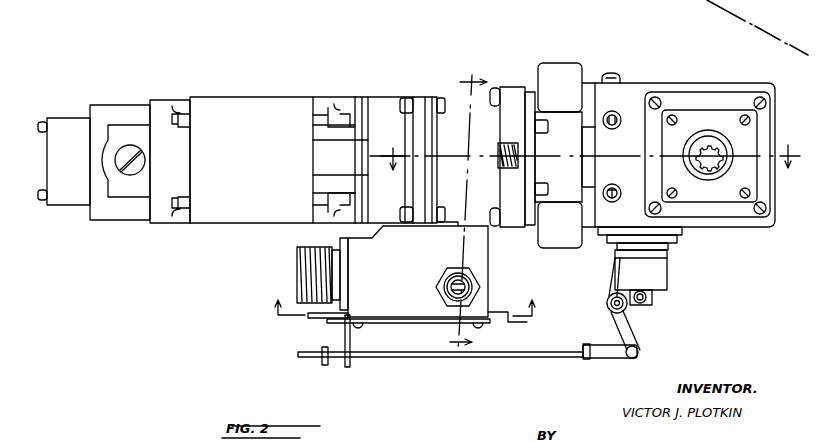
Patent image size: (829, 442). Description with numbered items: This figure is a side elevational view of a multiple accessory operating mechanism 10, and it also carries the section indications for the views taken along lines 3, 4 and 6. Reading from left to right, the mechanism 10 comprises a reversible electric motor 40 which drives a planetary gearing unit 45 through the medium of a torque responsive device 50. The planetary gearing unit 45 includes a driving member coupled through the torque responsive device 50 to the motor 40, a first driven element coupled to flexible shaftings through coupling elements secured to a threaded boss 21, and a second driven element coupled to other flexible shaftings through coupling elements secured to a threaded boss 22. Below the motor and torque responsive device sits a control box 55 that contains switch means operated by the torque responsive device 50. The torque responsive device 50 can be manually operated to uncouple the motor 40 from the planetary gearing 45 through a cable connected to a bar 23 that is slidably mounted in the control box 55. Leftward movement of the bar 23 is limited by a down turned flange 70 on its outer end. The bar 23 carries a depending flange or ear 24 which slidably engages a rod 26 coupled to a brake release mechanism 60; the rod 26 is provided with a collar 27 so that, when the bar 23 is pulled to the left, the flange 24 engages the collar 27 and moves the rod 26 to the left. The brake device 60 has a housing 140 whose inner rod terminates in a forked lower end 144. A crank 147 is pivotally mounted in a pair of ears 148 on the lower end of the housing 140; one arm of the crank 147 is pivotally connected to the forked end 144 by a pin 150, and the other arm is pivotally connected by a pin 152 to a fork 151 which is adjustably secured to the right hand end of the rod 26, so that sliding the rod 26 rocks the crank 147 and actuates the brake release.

The mechanism 10 is at (241, 239).
The reversible electric motor 40 is at (225, 106).
The torque responsive device 50 is at (445, 97).
The planetary gearing unit 45 is at (545, 63).
The threaded boss 21 is at (500, 169).
The threaded boss 22 is at (678, 161).
The control box 55 is at (488, 268).
The down turned flange 70 is at (510, 321).
The bar 23 is at (311, 320).
The depending flange 24 is at (351, 347).
The rod 26 is at (398, 358).
The collar 27 is at (325, 366).
The brake release mechanism 60 is at (662, 265).
The housing 140 is at (622, 268).
The ears 148 is at (608, 306).
The forked lower end 144 is at (654, 296).
The pin 150 is at (645, 306).
The crank 147 is at (629, 335).
The fork 151 is at (593, 360).
The pin 152 is at (640, 357).
The section line 3- 3 is at (587, 157).
The section line 4- 4 is at (461, 207).
The section line 6- 6 is at (402, 312).